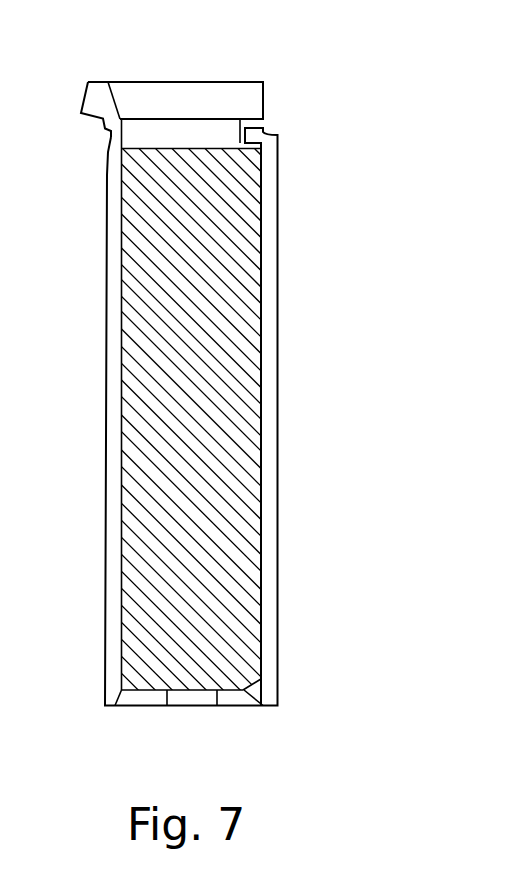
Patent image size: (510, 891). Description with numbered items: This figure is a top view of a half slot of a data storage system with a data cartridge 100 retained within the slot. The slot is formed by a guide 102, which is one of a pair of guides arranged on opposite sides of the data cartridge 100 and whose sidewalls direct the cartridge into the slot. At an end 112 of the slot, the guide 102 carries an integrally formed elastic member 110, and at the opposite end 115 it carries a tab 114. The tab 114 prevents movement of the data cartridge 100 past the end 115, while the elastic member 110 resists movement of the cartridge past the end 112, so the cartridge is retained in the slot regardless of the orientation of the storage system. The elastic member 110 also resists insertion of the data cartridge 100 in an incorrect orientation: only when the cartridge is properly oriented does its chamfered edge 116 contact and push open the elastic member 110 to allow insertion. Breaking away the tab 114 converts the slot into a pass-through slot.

The data cartridge 100 is at (238, 328).
The guide 102 is at (305, 392).
The elastic member 110 is at (268, 153).
The end 112 is at (170, 79).
The tab 114 is at (188, 708).
The end 115 is at (147, 708).
The chamfered edge 116 is at (253, 690).